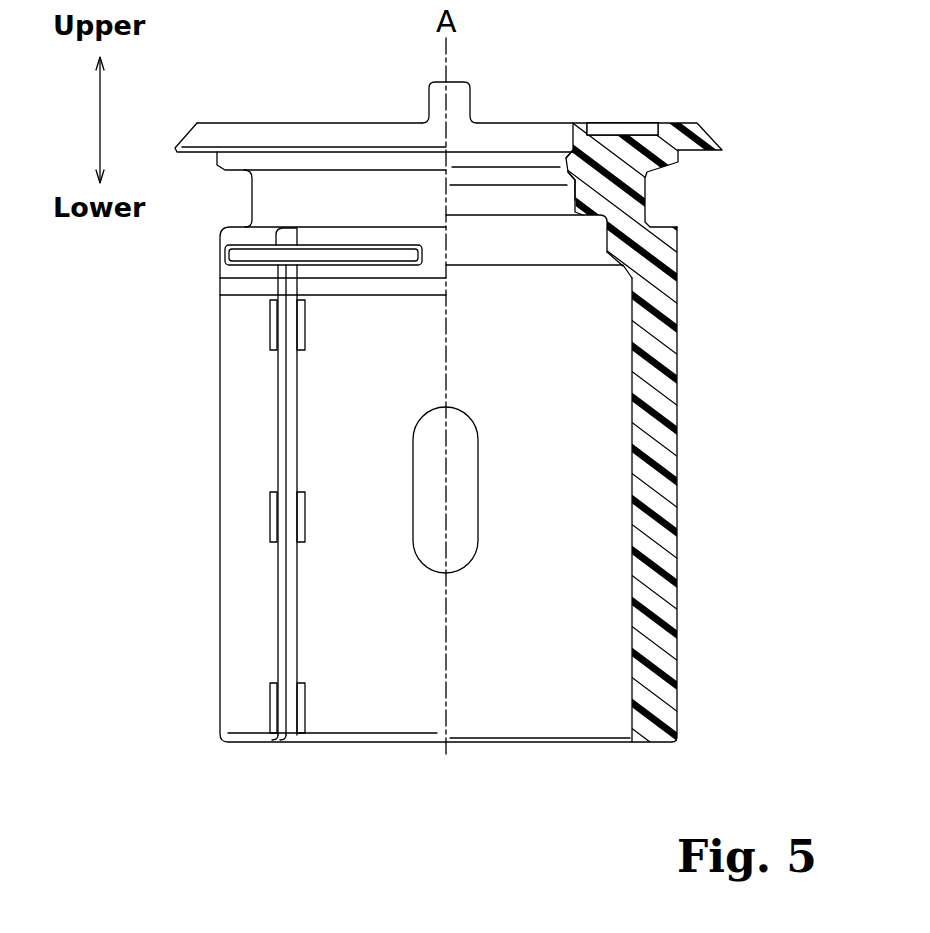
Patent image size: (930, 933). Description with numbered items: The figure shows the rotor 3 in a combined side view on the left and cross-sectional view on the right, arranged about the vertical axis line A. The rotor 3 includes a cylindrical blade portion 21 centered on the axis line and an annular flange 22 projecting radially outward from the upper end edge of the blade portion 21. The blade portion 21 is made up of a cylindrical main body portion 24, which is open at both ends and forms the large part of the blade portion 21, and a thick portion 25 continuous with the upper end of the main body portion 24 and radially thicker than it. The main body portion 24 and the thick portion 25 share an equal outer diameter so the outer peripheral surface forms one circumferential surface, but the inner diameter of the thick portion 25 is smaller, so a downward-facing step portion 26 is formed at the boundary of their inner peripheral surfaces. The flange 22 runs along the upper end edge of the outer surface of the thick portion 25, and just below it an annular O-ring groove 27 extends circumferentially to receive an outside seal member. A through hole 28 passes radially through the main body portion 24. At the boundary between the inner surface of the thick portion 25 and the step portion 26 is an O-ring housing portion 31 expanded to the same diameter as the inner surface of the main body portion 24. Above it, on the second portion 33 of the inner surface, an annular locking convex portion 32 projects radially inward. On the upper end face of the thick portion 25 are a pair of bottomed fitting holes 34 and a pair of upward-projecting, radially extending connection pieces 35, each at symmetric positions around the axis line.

The rotor 3 is at (698, 77).
The blade portion 21 is at (232, 536).
The flange 22 is at (258, 126).
The main body portion 24 is at (232, 430).
The thick portion 25 is at (344, 248).
The step portion 26 is at (622, 268).
The O-ring groove 27 is at (262, 200).
The through hole 28 is at (478, 522).
The O-ring housing portion 31 is at (607, 243).
The locking convex portion 32 is at (570, 152).
The second portion 33 is at (567, 192).
The fitting hole 34 is at (612, 133).
The connection piece 35 is at (458, 82).